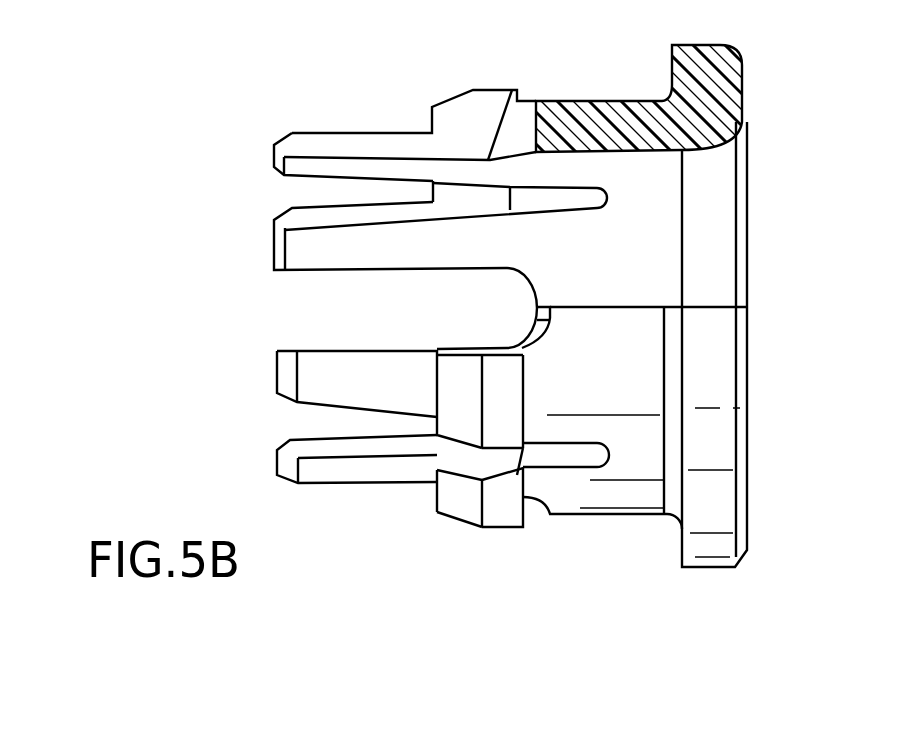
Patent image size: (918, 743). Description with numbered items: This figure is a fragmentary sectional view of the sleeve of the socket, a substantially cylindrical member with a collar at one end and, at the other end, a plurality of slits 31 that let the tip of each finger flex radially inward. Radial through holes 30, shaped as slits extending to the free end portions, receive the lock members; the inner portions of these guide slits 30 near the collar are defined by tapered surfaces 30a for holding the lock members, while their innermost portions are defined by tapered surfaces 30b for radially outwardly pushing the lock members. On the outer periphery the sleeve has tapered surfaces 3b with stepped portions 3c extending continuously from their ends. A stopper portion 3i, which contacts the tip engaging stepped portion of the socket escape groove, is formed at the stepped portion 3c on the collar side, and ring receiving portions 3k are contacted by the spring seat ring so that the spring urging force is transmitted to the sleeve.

The radial through hole 30 is at (298, 306).
The tapered surface 30a is at (478, 117).
The tapered surface 30b is at (533, 105).
The slit 31 is at (288, 412).
The tapered surface 3b is at (462, 500).
The stepped portion 3c is at (505, 505).
The ring receiving portion 3k is at (438, 493).
The stopper portion 3i is at (547, 502).